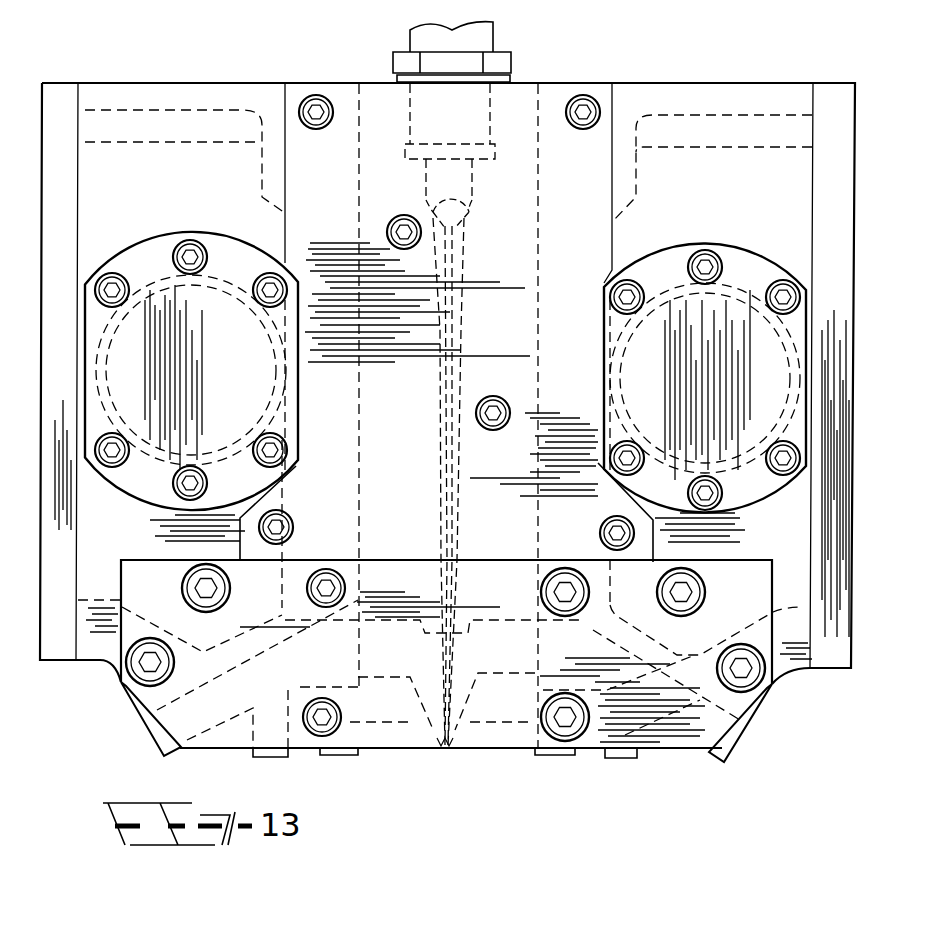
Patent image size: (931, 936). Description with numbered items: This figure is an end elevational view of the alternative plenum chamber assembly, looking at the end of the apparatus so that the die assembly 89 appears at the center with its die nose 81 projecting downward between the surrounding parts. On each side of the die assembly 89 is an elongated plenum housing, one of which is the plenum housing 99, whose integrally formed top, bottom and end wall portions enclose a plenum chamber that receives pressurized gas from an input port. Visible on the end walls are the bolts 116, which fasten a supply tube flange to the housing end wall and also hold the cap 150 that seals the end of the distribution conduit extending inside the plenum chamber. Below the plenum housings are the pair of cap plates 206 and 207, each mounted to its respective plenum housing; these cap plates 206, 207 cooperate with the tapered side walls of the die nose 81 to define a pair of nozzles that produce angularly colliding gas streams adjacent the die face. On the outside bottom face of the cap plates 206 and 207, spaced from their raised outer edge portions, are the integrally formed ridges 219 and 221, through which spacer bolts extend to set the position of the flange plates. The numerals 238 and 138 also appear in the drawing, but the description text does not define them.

The plenum housing 99 is at (748, 88).
The die assembly 89 is at (545, 110).
The bolts 116 is at (262, 298).
The cap 150 is at (132, 474).
The guide channel 238 is at (404, 501).
The lower clamp plate 138 is at (497, 577).
The cap plate 206 is at (285, 696).
The cap plate 207 is at (602, 641).
The ridge 219 is at (262, 753).
The ridge 221 is at (620, 758).
The die nose 81 is at (462, 740).